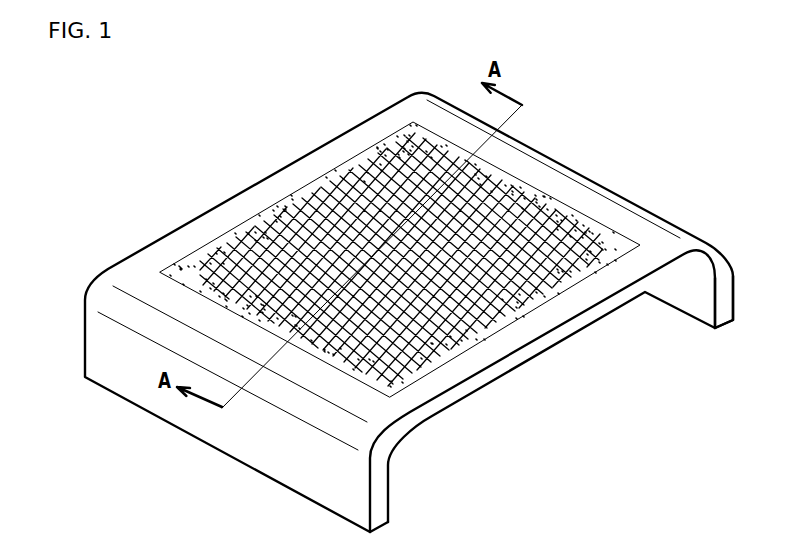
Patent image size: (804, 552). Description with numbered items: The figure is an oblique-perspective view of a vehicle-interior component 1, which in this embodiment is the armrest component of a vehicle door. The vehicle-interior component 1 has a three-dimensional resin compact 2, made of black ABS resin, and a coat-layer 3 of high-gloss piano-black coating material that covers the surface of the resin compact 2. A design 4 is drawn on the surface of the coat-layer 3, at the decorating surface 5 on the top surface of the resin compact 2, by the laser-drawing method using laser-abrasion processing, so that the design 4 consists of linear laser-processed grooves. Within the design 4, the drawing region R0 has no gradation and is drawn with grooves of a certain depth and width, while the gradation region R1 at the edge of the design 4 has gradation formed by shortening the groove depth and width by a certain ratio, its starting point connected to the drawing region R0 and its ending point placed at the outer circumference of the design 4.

The vehicle-interior component 1 is at (211, 171).
The resin compact 2 is at (619, 216).
The coat-layer 3 is at (403, 404).
The design 4 is at (474, 312).
The decorating surface 5 is at (488, 173).
The drawing region R0 is at (352, 203).
The gradation region R1 is at (195, 274).